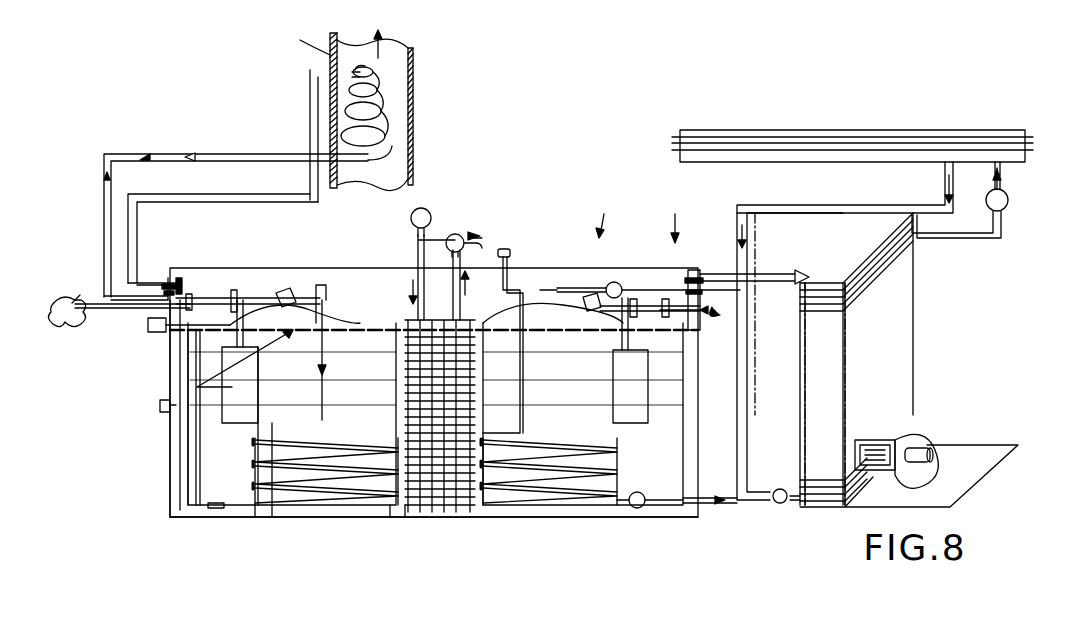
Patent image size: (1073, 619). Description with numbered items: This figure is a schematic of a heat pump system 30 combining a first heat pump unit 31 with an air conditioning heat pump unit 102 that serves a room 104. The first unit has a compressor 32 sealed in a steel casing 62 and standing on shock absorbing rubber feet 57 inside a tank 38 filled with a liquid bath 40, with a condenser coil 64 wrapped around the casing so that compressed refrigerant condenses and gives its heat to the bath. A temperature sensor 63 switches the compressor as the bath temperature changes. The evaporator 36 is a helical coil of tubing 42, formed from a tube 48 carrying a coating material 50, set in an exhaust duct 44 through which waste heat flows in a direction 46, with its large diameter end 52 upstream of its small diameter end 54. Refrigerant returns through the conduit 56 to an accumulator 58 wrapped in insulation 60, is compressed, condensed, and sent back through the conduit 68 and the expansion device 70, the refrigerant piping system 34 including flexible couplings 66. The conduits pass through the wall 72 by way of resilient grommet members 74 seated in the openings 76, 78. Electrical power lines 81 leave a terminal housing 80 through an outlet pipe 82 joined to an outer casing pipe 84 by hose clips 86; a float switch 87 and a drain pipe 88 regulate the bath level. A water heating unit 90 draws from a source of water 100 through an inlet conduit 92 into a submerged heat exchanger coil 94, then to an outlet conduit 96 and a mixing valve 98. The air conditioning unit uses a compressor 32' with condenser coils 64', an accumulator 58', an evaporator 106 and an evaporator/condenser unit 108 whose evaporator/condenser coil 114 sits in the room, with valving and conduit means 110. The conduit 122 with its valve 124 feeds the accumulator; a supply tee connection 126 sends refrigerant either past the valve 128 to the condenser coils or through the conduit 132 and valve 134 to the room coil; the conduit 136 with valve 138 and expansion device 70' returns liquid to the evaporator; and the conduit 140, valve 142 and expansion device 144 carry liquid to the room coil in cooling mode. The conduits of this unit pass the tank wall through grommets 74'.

The heat pump system 30 is at (278, 526).
The first heat pump unit 31 is at (434, 546).
The compressor 32 is at (325, 493).
The compressor 32' is at (549, 492).
The refrigerant piping system 34 is at (102, 204).
The evaporator 36 is at (383, 120).
The tank 38 is at (173, 525).
The liquid bath 40 is at (208, 464).
The helical coil of tubing 42 is at (318, 174).
The exhaust duct 44 is at (330, 53).
The direction 46 is at (394, 44).
The tube 48 is at (410, 173).
The coating material 50 is at (345, 150).
The large diameter end 52 is at (398, 150).
The small diameter end 54 is at (379, 76).
The conduit 56 is at (236, 204).
The shock absorbing rubber feet 57 is at (386, 515).
The accumulator 58 is at (187, 426).
The accumulator 58' is at (673, 386).
The insulation 60 is at (160, 405).
The casing 62 is at (270, 427).
The temperature sensor 63 is at (187, 408).
The condenser coil 64 is at (326, 501).
The condenser coils 64' is at (550, 497).
The flexible couplings 66 is at (200, 540).
The conduit 68 is at (183, 482).
The expansion device 70 is at (236, 225).
The expansion device 70' is at (1028, 178).
The wall 72 is at (195, 342).
The resilient grommet members 74 is at (127, 267).
The grommets 74' is at (697, 294).
The opening 76 is at (182, 290).
The opening 78 is at (190, 296).
The terminal housing 80 is at (288, 294).
The electrical power lines 81 is at (80, 326).
The outlet pipe 82 is at (247, 292).
The outer casing pipe 84 is at (149, 318).
The hose clips 86 is at (240, 297).
The float switch 87 is at (148, 330).
The drain pipe 88 is at (397, 321).
The water heating unit 90 is at (465, 520).
The inlet conduit 92 is at (417, 262).
The heat exchanger coil 94 is at (432, 515).
The outlet conduit 96 is at (465, 260).
The mixing valve 98 is at (457, 233).
The source of water 100 is at (410, 222).
The air conditioning heat pump unit 102 is at (604, 210).
The room 104 is at (985, 325).
The evaporator 106 is at (836, 128).
The evaporator/condenser unit 108 is at (920, 310).
The valving and conduit means 110 is at (673, 212).
The evaporator/condenser coil 114 is at (802, 362).
The conduit 122 is at (945, 185).
The valve 124 is at (778, 504).
The supply tee connection 126 is at (550, 288).
The valve 128 is at (504, 248).
The conduit 132 is at (606, 284).
The valve 134 is at (631, 298).
The conduit 136 is at (981, 238).
The valve 138 is at (1008, 204).
The conduit 140 is at (682, 506).
The valve 142 is at (636, 508).
The expansion device 144 is at (811, 274).